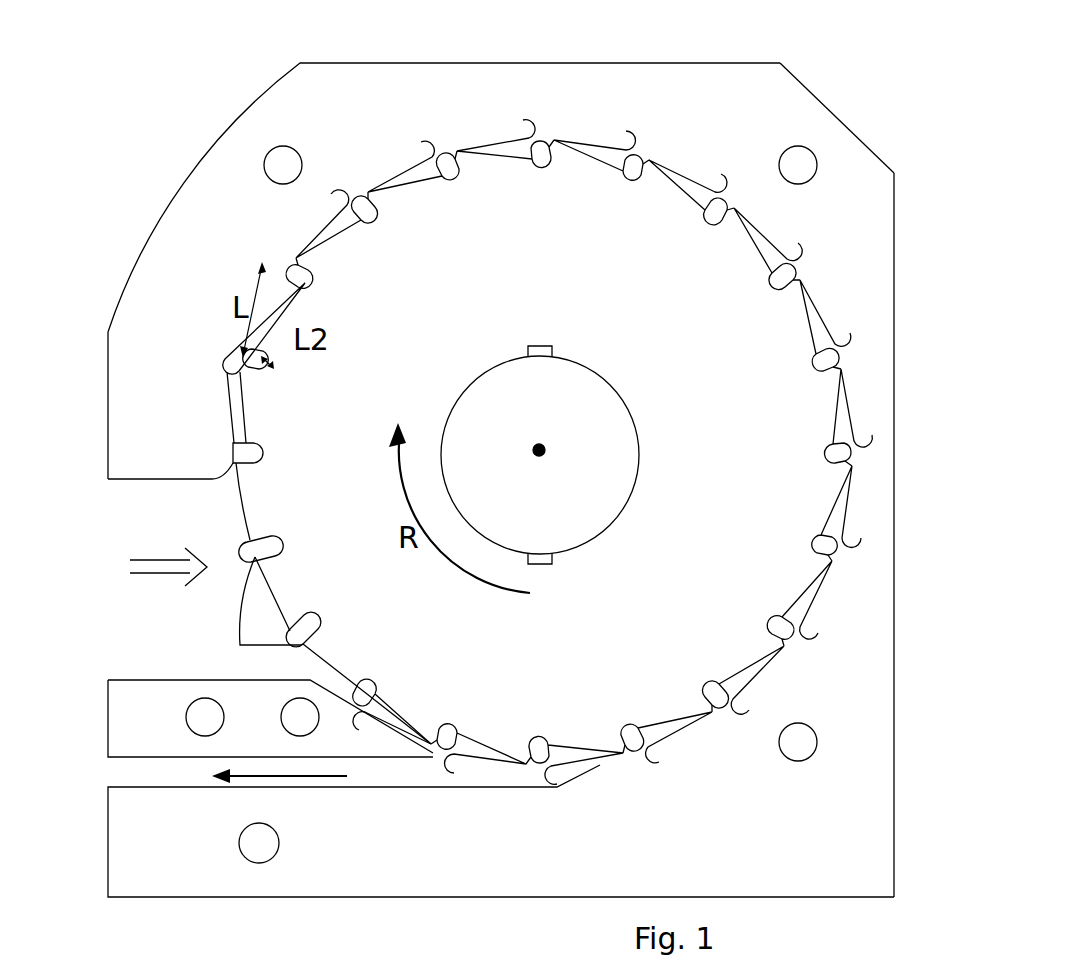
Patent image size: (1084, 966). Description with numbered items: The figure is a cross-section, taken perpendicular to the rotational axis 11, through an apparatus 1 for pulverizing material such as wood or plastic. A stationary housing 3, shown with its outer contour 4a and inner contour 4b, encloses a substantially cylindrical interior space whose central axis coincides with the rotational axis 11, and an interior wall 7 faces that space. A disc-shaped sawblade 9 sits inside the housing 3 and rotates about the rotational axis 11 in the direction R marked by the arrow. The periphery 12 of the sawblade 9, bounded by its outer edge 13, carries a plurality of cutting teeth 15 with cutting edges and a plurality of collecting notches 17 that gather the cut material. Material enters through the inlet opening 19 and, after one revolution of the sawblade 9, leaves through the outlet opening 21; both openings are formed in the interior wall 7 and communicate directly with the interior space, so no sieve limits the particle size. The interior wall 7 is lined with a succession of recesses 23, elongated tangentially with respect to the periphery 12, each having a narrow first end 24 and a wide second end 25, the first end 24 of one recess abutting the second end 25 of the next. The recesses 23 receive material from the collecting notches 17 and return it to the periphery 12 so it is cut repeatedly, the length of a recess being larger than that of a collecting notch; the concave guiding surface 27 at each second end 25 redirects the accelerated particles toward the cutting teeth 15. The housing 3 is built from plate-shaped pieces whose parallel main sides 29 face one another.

The apparatus for pulverizing a material 1 is at (138, 148).
The stationary housing 3 is at (160, 246).
The outer contour 4a is at (897, 222).
The inner contour 4b is at (827, 309).
The interior wall 7 is at (538, 140).
The sawblade 9 is at (790, 432).
The rotational axis 11 is at (539, 452).
The periphery of the sawblade 12 is at (512, 136).
The outer edge of the sawblade 13 is at (420, 153).
The cutting teeth 15 is at (240, 645).
The collecting notches 17 is at (255, 557).
The inlet opening 19 is at (162, 552).
The outlet opening 21 is at (190, 790).
The recesses 23 is at (282, 278).
The first end 24 is at (238, 462).
The second end 25 is at (233, 357).
The guiding surface 27 is at (235, 365).
The main sides 29 is at (780, 107).